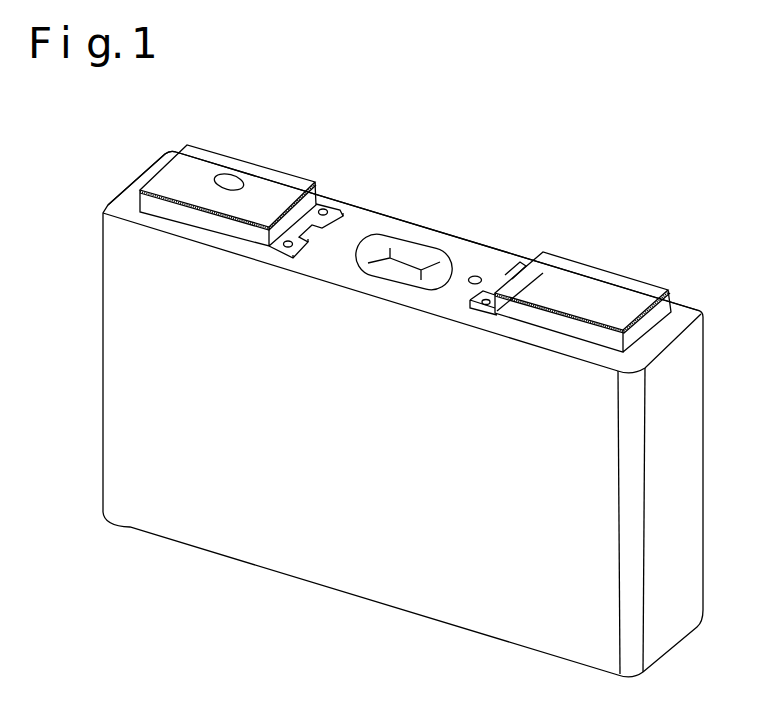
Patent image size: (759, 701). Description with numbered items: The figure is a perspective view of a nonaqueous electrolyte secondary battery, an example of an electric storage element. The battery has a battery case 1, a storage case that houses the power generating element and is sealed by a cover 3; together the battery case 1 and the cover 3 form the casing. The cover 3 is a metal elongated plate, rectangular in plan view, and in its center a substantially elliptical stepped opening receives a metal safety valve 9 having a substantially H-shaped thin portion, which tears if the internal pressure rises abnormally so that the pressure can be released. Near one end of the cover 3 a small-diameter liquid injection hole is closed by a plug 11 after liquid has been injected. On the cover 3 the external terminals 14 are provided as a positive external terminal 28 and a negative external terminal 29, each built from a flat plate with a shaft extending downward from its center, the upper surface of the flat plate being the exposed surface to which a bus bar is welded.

The battery case 1 is at (385, 558).
The cover 3 is at (360, 213).
The safety valve 9 is at (418, 252).
The plug 11 is at (475, 276).
The external terminals 14 is at (405, 214).
The positive external terminal 28 is at (214, 168).
The negative external terminal 29 is at (557, 272).